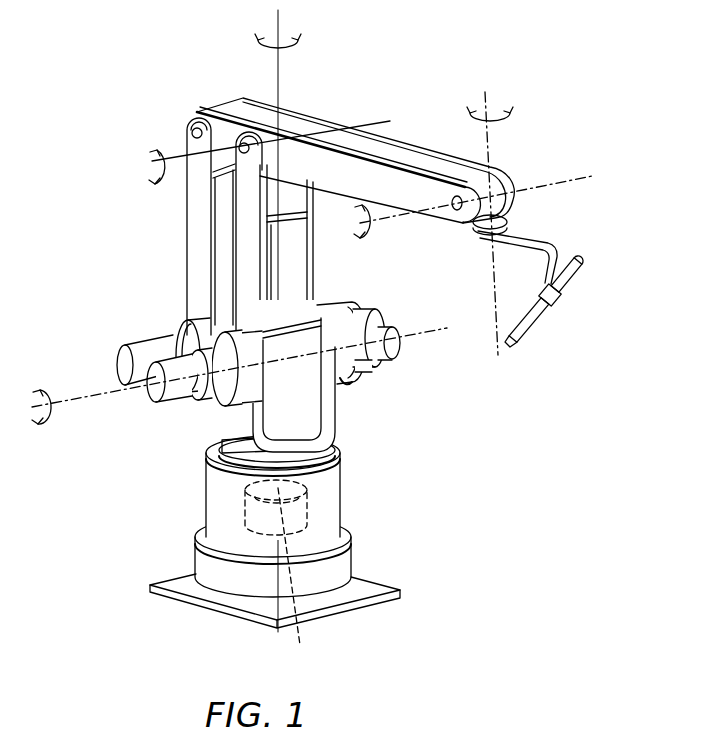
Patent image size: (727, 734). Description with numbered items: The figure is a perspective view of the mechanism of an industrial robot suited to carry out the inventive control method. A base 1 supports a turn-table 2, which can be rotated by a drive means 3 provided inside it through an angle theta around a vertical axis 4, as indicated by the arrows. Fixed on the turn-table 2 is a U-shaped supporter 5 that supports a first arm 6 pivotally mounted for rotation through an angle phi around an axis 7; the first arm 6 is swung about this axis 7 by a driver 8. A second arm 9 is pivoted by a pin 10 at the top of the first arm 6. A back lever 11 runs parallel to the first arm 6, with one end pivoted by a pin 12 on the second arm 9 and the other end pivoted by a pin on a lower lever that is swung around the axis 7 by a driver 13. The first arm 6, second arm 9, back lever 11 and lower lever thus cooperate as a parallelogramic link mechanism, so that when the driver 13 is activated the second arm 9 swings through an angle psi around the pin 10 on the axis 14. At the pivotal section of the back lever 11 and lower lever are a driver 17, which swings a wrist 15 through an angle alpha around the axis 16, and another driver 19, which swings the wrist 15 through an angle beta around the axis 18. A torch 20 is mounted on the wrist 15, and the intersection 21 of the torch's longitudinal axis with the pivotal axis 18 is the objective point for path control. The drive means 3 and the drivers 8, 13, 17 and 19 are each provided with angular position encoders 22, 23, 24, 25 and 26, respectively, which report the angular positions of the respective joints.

The base 1 is at (345, 600).
The turn-table 2 is at (343, 455).
The drive means 3 is at (307, 512).
The vertical axis 4 is at (278, 75).
The U-shaped supporter 5 is at (337, 412).
The first arm 6 is at (297, 252).
The axis 7 is at (438, 325).
The driver 8 is at (215, 405).
The second arm 9 is at (403, 185).
The pin 10 is at (244, 145).
The back lever 11 is at (197, 242).
The pin 12 is at (196, 130).
The driver 13 is at (364, 370).
The axis 14 is at (378, 122).
The wrist 15 is at (507, 216).
The axis 16 is at (575, 170).
The driver 17 is at (160, 336).
The axis 18 is at (487, 140).
The driver 19 is at (328, 310).
The torch 20 is at (573, 277).
The intersection 21 is at (503, 353).
The angular position encoder 22 is at (299, 578).
The angular position encoder 23 is at (171, 397).
The angular position encoder 24 is at (400, 350).
The angular position encoder 25 is at (132, 346).
The angular position encoder 26 is at (362, 308).